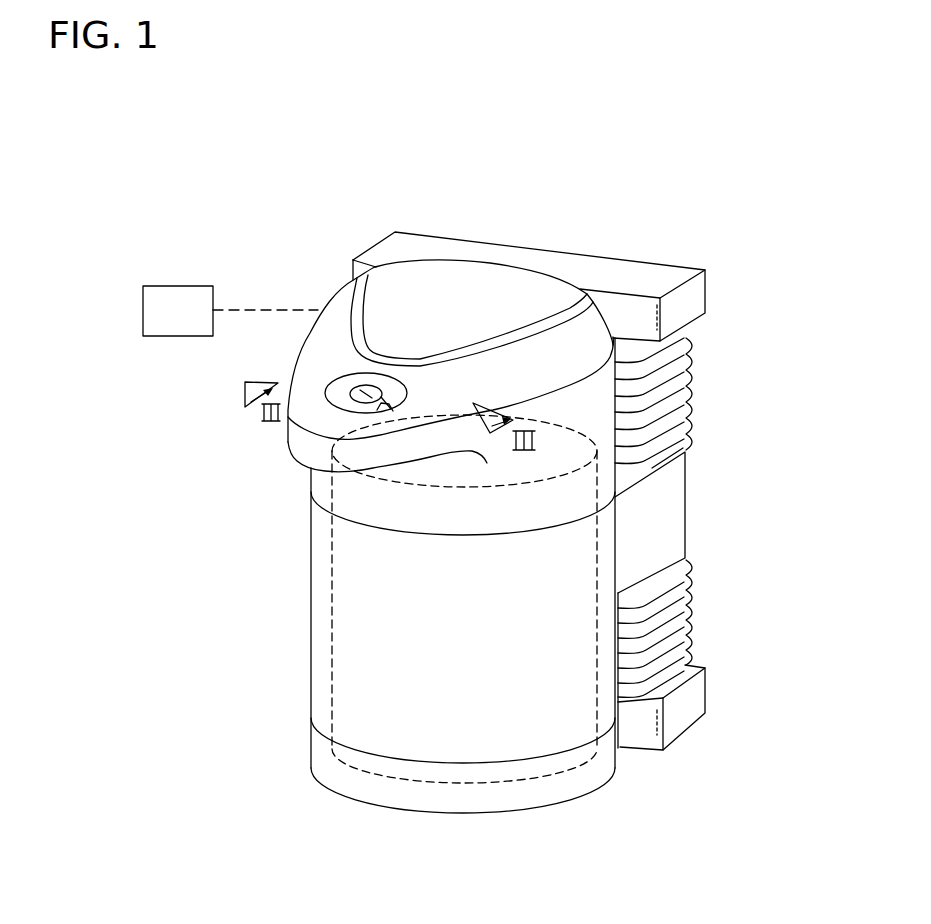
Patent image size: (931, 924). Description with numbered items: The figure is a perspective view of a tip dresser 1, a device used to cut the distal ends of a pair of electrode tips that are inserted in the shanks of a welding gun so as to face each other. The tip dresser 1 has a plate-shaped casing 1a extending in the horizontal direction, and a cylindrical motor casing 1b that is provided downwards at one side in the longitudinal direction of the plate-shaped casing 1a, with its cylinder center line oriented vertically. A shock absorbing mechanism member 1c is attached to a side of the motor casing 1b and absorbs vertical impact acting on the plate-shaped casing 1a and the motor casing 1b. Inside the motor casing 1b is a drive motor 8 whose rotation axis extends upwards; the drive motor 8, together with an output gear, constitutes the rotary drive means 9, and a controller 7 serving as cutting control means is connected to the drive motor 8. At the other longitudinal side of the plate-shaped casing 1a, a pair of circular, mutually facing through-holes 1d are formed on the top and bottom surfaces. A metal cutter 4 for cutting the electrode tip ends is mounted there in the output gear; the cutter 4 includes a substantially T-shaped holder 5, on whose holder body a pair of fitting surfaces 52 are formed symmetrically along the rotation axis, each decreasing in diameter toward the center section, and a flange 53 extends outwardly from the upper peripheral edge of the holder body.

The tip dresser 1 is at (728, 184).
The plate-shaped casing 1a is at (315, 337).
The motor casing 1b is at (327, 650).
The shock absorbing mechanism member 1c is at (692, 357).
The through-holes 1d is at (389, 404).
The cutter 4 is at (348, 372).
The holder 5 is at (357, 403).
The fitting surfaces 52 is at (366, 392).
The flange 53 is at (389, 385).
The controller 7 is at (176, 284).
The drive motor 8 is at (518, 786).
The rotary drive means 9 is at (464, 766).